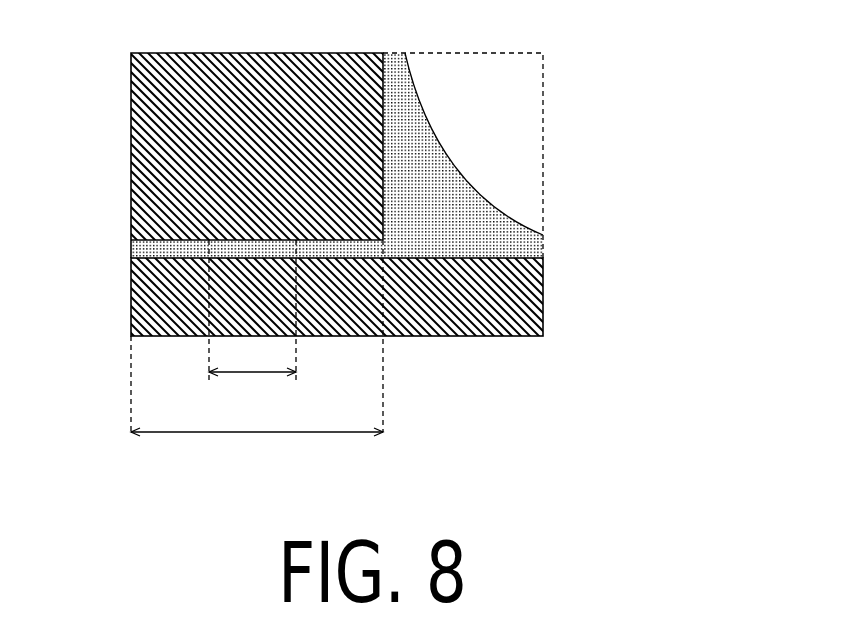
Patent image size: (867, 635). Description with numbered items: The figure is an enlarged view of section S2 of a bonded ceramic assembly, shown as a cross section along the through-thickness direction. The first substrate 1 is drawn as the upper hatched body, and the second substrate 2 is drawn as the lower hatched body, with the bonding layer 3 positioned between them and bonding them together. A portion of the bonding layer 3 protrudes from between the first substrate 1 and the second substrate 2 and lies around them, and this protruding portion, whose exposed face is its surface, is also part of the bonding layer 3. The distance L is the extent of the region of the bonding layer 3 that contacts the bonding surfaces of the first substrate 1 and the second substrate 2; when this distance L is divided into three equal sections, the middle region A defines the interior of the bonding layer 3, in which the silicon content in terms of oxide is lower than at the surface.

The first substrate 1 is at (193, 153).
The second substrate 2 is at (193, 317).
The bonding layer 3 is at (200, 254).
The middle region A is at (257, 374).
The distance L is at (253, 434).
The section S2 is at (502, 53).